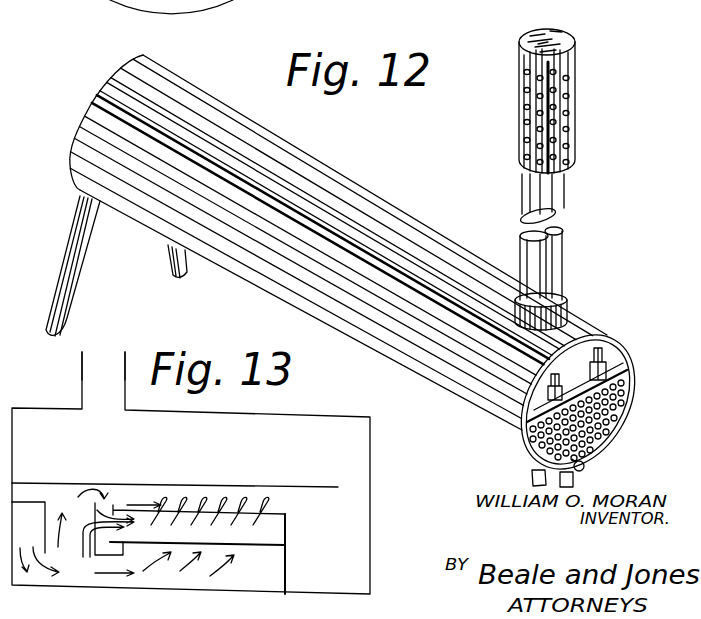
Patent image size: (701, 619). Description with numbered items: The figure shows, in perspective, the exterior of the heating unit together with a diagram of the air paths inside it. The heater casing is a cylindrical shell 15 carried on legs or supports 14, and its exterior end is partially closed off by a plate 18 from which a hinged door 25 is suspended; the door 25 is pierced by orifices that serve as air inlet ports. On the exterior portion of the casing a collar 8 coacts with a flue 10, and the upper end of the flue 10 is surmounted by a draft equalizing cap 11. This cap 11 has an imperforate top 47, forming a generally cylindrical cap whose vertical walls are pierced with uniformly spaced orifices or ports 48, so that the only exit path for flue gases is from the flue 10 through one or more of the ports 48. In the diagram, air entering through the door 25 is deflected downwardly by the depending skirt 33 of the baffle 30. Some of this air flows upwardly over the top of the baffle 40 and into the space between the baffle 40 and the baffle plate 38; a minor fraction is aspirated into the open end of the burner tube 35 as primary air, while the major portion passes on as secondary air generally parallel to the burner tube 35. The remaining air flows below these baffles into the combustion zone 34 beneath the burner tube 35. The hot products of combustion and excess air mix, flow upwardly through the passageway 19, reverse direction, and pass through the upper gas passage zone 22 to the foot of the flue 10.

In FIG. 12, the collar 8 is at (568, 305).
In FIG. 12, the flue 10 is at (558, 194).
In FIG. 13, the flue 10 is at (97, 373).
In FIG. 12, the draft equalizing cap 11 is at (568, 96).
In FIG. 12, the legs or supports 14 is at (79, 239).
In FIG. 12, the cylindrical shell 15 is at (308, 158).
In FIG. 12, the plate 18 is at (608, 340).
In FIG. 13, the passageway 19 is at (353, 487).
In FIG. 13, the gas passage zone 22 is at (277, 437).
In FIG. 12, the door 25 is at (614, 419).
In FIG. 13, the baffle 30 is at (25, 504).
In FIG. 13, the depending skirt 33 is at (47, 522).
In FIG. 13, the combustion zone 34 is at (263, 578).
In FIG. 13, the burner tube 35 is at (273, 530).
In FIG. 13, the baffle plate 38 is at (127, 485).
In FIG. 13, the baffle 40 is at (105, 529).
In FIG. 12, the imperforate top 47 is at (558, 42).
In FIG. 12, the orifices or ports 48 is at (566, 138).